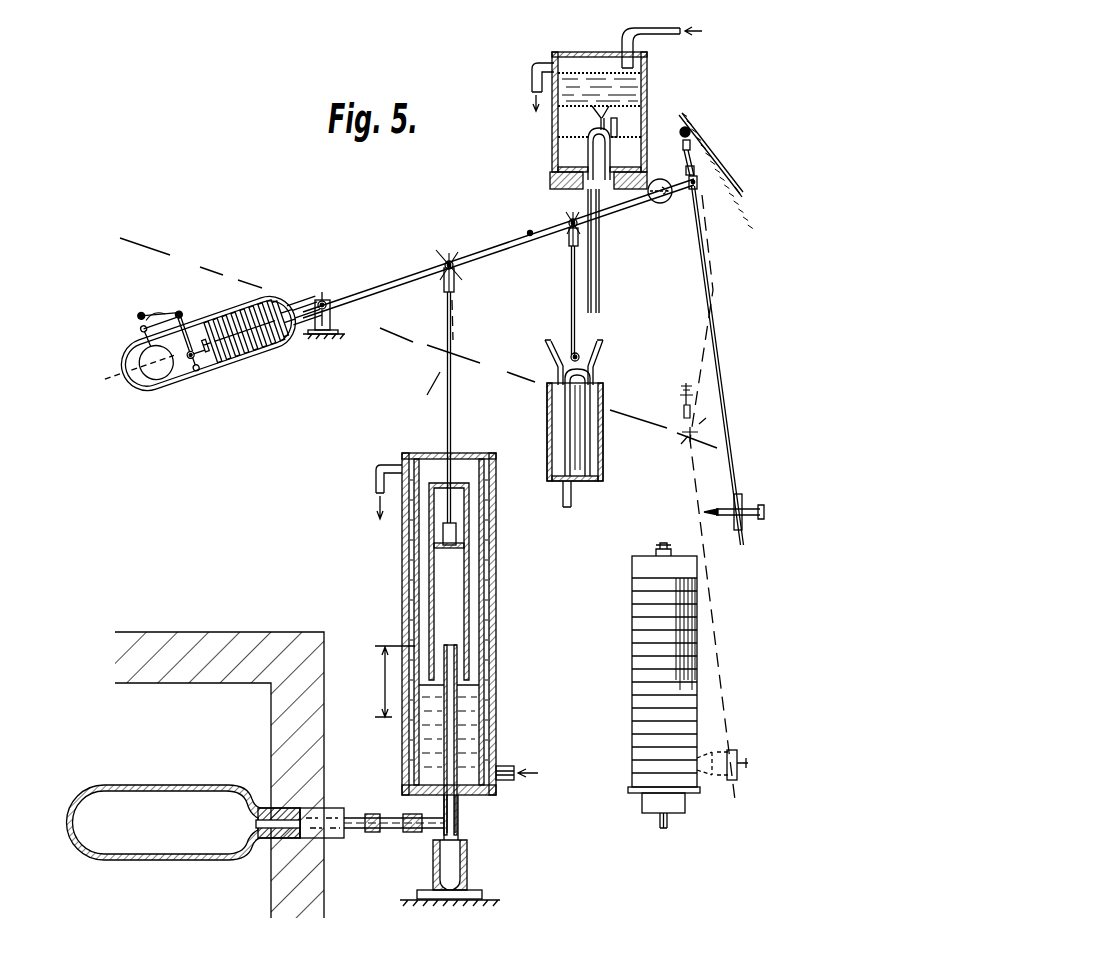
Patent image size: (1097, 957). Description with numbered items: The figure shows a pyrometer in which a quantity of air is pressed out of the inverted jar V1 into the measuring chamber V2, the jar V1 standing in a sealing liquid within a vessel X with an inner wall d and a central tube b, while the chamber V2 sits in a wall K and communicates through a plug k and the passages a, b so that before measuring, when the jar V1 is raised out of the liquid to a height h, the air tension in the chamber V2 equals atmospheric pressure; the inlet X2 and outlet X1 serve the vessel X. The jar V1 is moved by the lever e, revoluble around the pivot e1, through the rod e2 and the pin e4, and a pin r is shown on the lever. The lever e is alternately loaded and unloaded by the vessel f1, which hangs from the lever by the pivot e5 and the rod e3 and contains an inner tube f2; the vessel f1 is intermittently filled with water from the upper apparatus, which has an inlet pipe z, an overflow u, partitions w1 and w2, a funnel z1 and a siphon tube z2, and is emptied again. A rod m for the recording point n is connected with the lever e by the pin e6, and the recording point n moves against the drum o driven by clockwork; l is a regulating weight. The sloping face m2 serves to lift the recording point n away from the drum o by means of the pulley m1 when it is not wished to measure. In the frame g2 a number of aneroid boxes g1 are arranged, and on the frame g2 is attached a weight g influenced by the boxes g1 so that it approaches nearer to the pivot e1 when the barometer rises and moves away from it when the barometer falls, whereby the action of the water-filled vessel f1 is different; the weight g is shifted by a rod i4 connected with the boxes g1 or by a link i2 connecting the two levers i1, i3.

The inlet pipe z is at (662, 35).
The upper vessel partition w1 is at (645, 80).
The lower vessel partition w2 is at (643, 152).
The funnel z1 is at (596, 116).
The siphon tube z2 is at (598, 220).
The overflow outlet u is at (531, 87).
The lever e is at (396, 290).
The pin r is at (524, 225).
The pivot e1 is at (324, 301).
The pin e4 is at (454, 259).
The rod e2 is at (450, 418).
The lever pivot joint e5 is at (562, 236).
The connecting rod e3 is at (571, 290).
The regulating weight l is at (655, 203).
The pin e6 is at (698, 189).
The pulley m1 is at (700, 129).
The sloping face m2 is at (733, 185).
The rod m is at (712, 493).
The recording point n is at (734, 504).
The vessel f1 is at (612, 418).
The float tube f2 is at (558, 430).
The weight g is at (213, 350).
The aneroid boxes g1 is at (262, 355).
The frame g2 is at (188, 393).
The lever i1 is at (200, 339).
The link i2 is at (175, 326).
The lever i3 is at (147, 325).
The rod i4 is at (103, 362).
The outer vessel X is at (402, 566).
The inner vessel d is at (470, 746).
The inverted jar V1 is at (449, 581).
The passage b is at (452, 712).
The liquid height h is at (395, 681).
The inlet pipe X2 is at (373, 492).
The outlet pipe X1 is at (517, 789).
The wall K is at (219, 775).
The measuring chamber V2 is at (184, 822).
The wall plug k is at (262, 845).
The passage a is at (316, 812).
The drum o is at (632, 580).